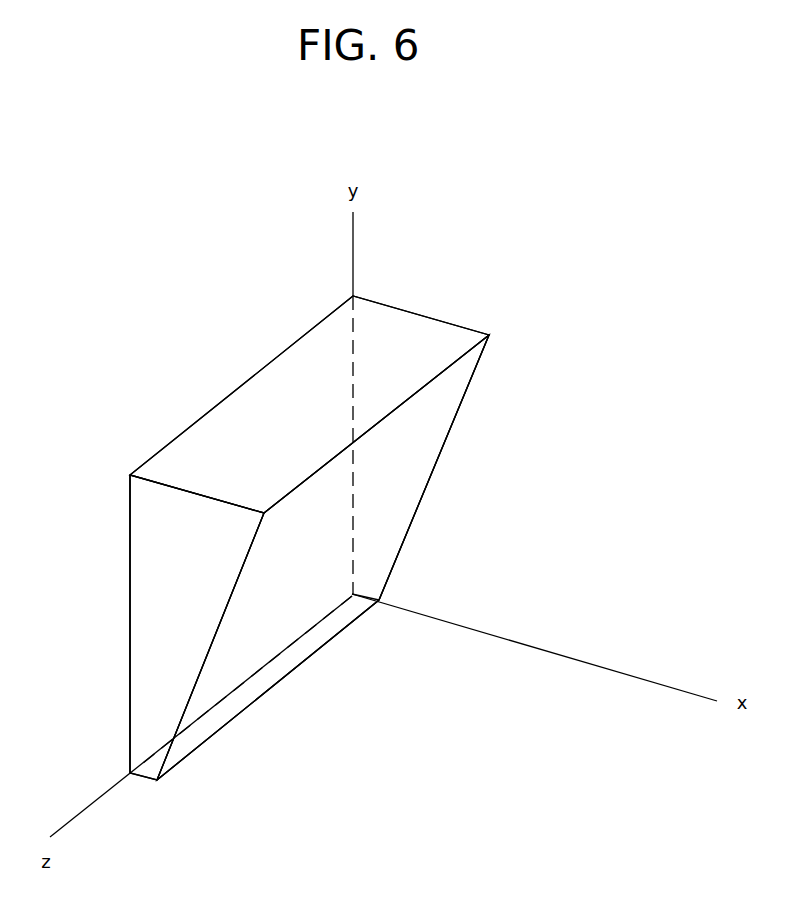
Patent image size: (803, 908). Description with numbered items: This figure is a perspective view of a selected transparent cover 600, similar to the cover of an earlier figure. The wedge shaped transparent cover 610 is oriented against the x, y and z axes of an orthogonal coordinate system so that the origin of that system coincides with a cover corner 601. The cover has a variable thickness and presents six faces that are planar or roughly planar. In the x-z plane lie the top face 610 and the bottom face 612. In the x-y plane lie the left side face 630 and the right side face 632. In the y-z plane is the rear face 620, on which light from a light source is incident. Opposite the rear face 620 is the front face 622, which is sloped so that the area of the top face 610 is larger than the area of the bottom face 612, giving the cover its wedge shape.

The transparent cover 600 is at (606, 152).
The cover corner 601 is at (352, 596).
The top face 610 is at (213, 458).
The bottom face 612 is at (197, 748).
The rear face 620 is at (130, 647).
The front face 622 is at (386, 581).
The left side face 630 is at (150, 555).
The right side face 632 is at (447, 436).